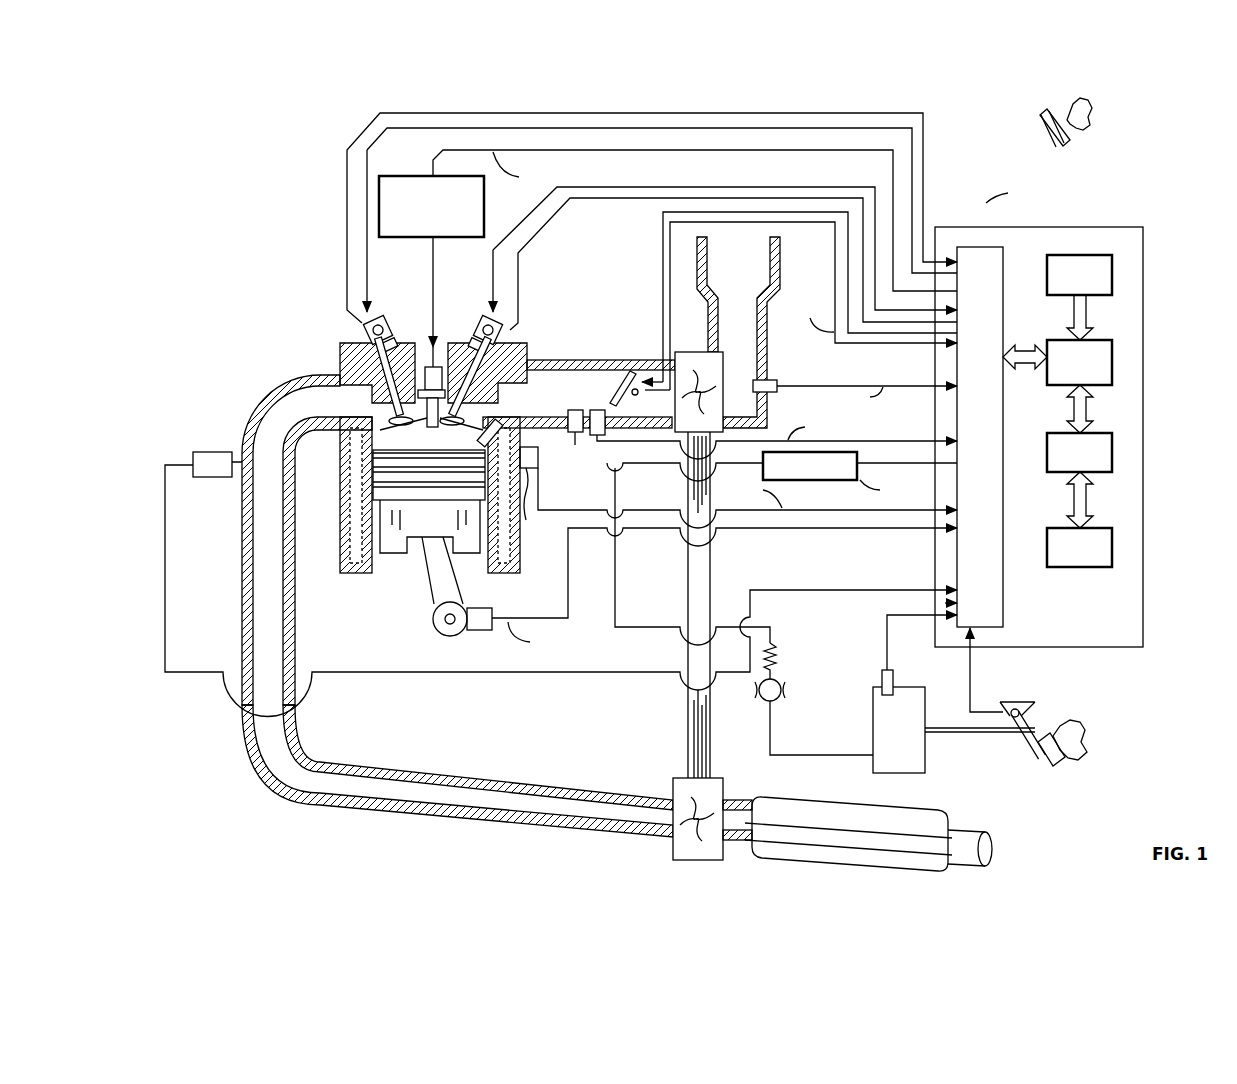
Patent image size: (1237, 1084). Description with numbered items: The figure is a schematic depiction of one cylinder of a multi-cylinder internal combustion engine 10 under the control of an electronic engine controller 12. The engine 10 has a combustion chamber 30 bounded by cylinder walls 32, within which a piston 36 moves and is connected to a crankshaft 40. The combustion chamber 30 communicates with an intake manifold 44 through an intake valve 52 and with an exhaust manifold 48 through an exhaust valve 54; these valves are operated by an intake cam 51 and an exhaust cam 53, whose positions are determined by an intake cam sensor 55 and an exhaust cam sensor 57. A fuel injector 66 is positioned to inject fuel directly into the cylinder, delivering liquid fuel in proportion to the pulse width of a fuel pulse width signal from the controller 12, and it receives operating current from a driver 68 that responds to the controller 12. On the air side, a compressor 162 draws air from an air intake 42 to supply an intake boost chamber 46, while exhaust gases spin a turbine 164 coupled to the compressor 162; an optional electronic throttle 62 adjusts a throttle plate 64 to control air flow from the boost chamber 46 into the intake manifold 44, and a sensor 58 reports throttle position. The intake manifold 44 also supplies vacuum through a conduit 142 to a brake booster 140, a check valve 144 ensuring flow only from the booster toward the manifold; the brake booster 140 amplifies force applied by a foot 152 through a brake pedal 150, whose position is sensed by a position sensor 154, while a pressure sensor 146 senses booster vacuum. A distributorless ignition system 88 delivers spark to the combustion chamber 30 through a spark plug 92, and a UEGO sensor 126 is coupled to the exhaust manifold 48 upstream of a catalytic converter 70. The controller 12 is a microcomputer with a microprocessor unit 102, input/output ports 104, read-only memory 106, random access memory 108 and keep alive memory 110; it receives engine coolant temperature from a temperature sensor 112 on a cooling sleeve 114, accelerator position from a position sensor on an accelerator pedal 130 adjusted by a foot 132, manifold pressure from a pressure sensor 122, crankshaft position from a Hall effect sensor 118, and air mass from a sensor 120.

The internal combustion engine 10 is at (280, 298).
The electronic engine controller 12 is at (1132, 227).
The combustion chamber 30 is at (345, 538).
The cylinder walls 32 is at (378, 560).
The piston 36 is at (415, 550).
The crankshaft 40 is at (442, 637).
The air intake 42 is at (727, 279).
The intake manifold 44 is at (540, 401).
The intake boost chamber 46 is at (645, 414).
The exhaust manifold 48 is at (300, 411).
The intake cam 51 is at (480, 320).
The intake valve 52 is at (463, 412).
The exhaust cam 53 is at (380, 320).
The exhaust valve 54 is at (373, 410).
The intake cam sensor 55 is at (510, 338).
The exhaust cam sensor 57 is at (357, 332).
The throttle position sensor 58 is at (640, 378).
The electronic throttle 62 is at (610, 372).
The throttle plate 64 is at (632, 372).
The fuel injector 66 is at (503, 428).
The driver 68 is at (835, 481).
The catalytic converter 70 is at (762, 863).
The distributorless ignition system 88 is at (392, 176).
The spark plug 92 is at (440, 357).
The microprocessor unit 102 is at (1113, 353).
The input/output ports 104 is at (1005, 255).
The read-only memory 106 is at (1113, 272).
The random access memory 108 is at (1113, 450).
The keep alive memory 110 is at (676, 483).
The temperature sensor 112 is at (532, 505).
The cooling sleeve 114 is at (517, 542).
The Hall effect sensor 118 is at (475, 633).
The air mass sensor 120 is at (775, 380).
The pressure sensor 122 is at (598, 410).
The UEGO sensor 126 is at (195, 452).
The accelerator pedal 130 is at (1040, 123).
The foot 132 is at (1090, 112).
The brake booster 140 is at (886, 739).
The conduit 142 is at (612, 615).
The check valve 144 is at (760, 700).
The pressure sensor 146 is at (893, 670).
The brake pedal 150 is at (1038, 757).
The foot 152 is at (1067, 722).
The position sensor 154 is at (1005, 712).
The compressor 162 is at (707, 352).
The turbine 164 is at (680, 778).